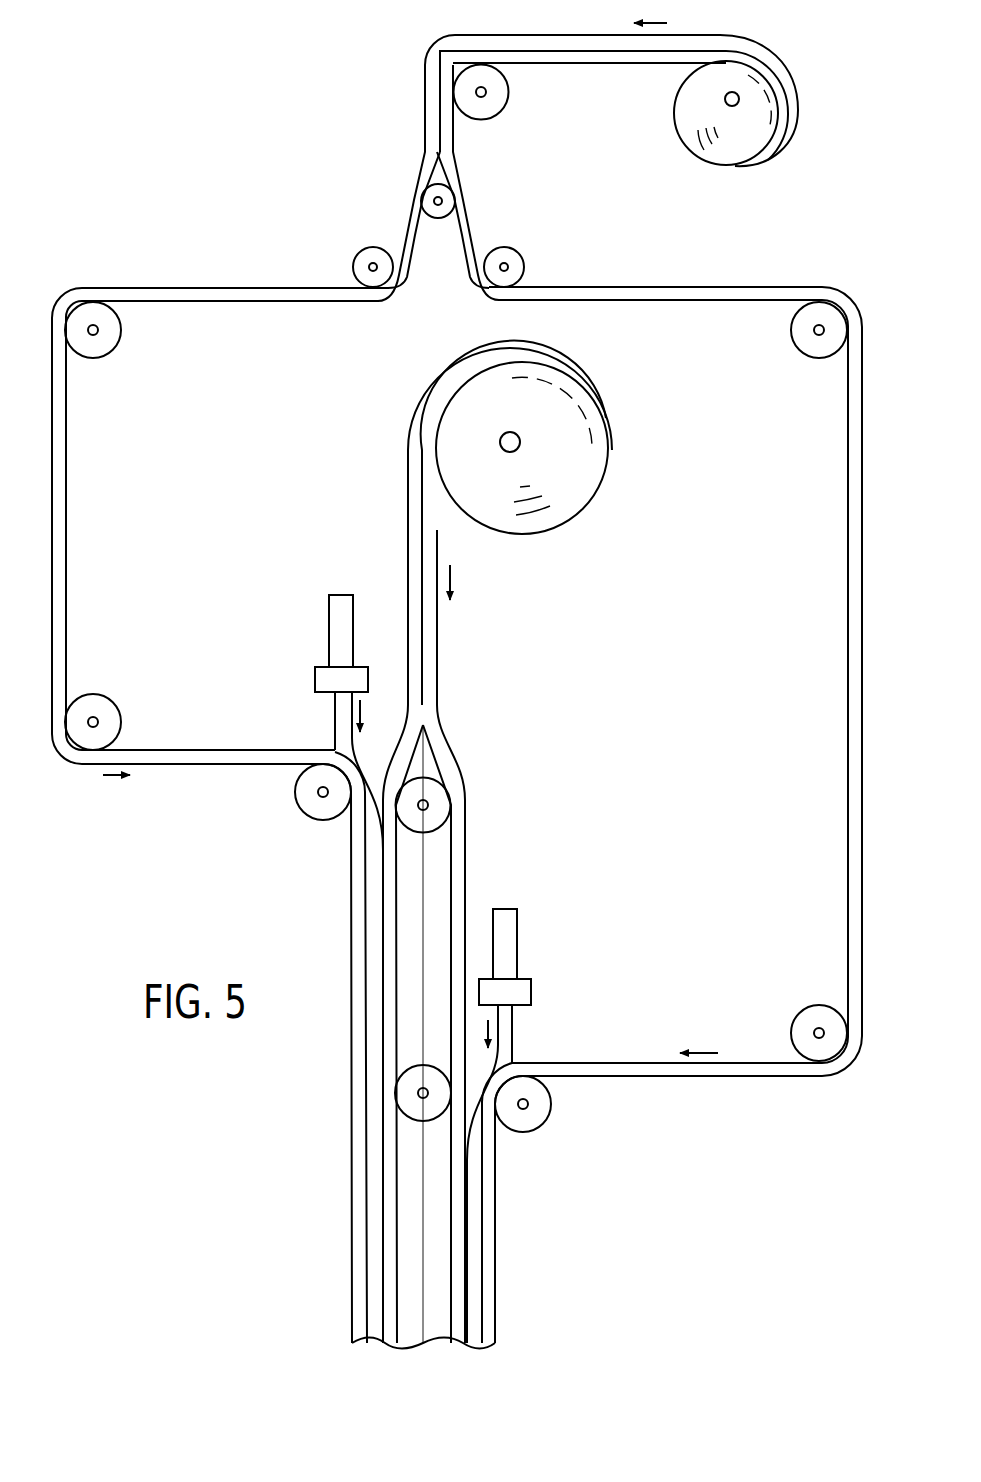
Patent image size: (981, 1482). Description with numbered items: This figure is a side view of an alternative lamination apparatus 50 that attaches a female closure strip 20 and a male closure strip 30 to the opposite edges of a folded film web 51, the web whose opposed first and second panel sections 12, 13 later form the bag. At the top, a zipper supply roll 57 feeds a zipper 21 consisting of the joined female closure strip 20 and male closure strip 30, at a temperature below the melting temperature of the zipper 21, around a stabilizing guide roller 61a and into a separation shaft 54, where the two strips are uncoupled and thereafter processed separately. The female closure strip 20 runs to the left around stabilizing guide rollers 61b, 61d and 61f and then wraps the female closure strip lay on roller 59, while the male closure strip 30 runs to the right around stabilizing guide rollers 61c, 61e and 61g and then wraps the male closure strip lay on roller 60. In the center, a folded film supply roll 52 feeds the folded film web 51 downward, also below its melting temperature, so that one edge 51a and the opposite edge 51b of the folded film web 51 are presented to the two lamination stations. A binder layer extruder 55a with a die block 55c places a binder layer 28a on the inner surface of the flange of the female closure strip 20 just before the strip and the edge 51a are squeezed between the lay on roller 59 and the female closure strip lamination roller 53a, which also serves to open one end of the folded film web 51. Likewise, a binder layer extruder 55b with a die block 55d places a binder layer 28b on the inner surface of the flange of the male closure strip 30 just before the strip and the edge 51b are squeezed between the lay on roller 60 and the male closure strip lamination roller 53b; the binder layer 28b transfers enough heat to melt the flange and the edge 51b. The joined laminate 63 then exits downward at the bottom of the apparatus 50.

The first panel section 12 is at (398, 904).
The second panel section 13 is at (424, 949).
The female closure strip 20 is at (570, 40).
The zipper 21 is at (615, 72).
The binder layer 28a is at (330, 725).
The binder layer 28b is at (522, 1035).
The male closure strip 30 is at (567, 62).
The lamination apparatus 50 is at (65, 810).
The folded film web 51 is at (403, 550).
The edge of folded film web 51a is at (403, 744).
The opposite edge of folded film web 51b is at (464, 879).
The folded film supply roll 52 is at (570, 505).
The female closure strip lamination roller 53a is at (446, 807).
The male closure strip lamination roller 53b is at (430, 1116).
The separation shaft 54 is at (438, 224).
The binder layer extruder 55a is at (322, 643).
The binder layer extruder 55b is at (532, 962).
The die block 55c is at (312, 680).
The die block 55d is at (538, 992).
The zipper supply roll 57 is at (792, 103).
The female closure strip lay on roller 59 is at (308, 808).
The male closure strip lay on roller 60 is at (533, 1125).
The stabilizing guide roller 61a is at (478, 121).
The stabilizing guide roller 61b is at (368, 246).
The stabilizing guide roller 61c is at (508, 247).
The stabilizing guide roller 61d is at (113, 352).
The stabilizing guide roller 61e is at (795, 352).
The stabilizing guide roller 61f is at (115, 702).
The stabilizing guide roller 61g is at (803, 1014).
The combined web output 63 is at (342, 1283).